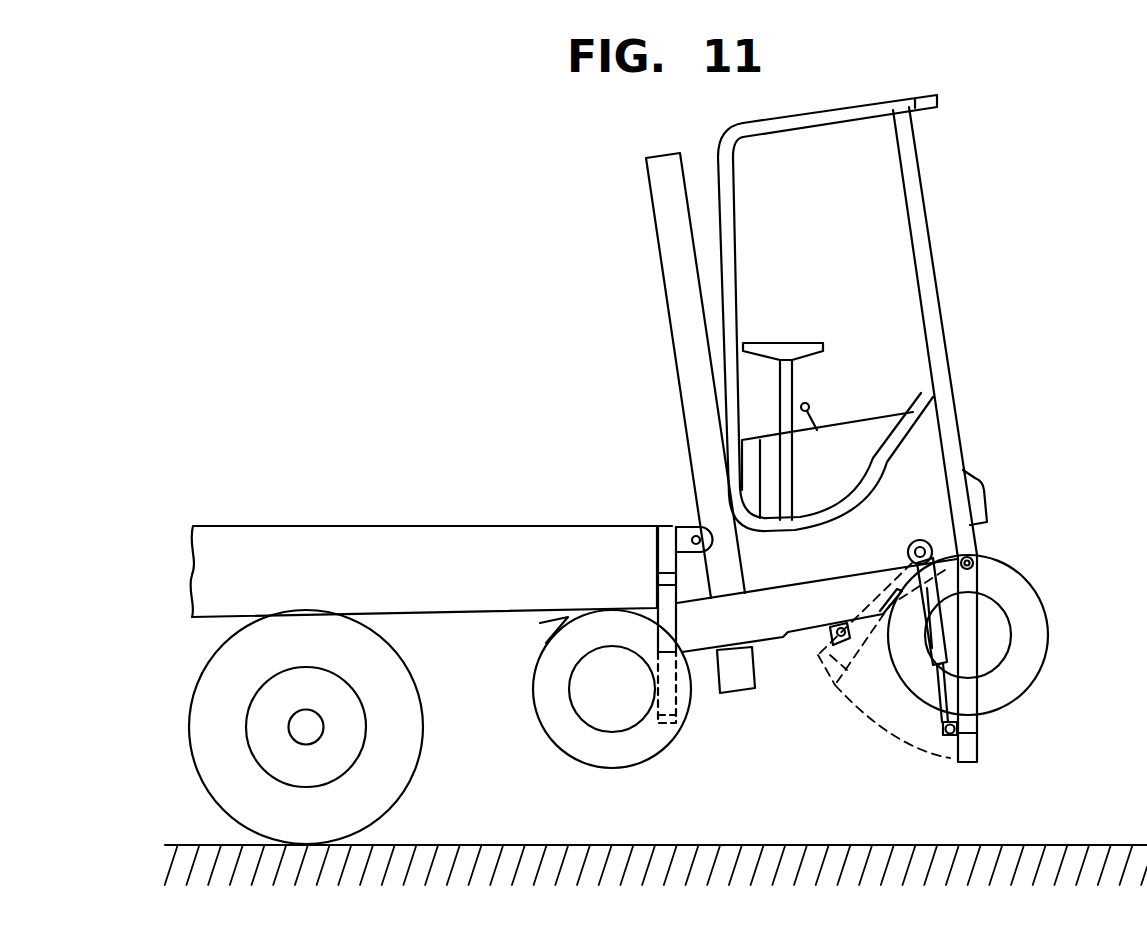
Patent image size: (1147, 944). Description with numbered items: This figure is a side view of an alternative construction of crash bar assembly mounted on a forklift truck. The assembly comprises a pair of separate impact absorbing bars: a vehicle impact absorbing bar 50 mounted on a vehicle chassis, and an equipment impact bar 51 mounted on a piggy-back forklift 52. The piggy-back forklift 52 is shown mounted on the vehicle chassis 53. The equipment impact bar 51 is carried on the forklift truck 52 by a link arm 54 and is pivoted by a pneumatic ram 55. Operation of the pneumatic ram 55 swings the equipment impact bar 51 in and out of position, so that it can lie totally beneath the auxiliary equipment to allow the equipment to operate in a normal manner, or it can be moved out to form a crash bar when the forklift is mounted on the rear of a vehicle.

The vehicle impact absorbing bar 50 is at (667, 723).
The equipment impact bar 51 is at (970, 750).
The piggy-back forklift 52 is at (935, 310).
The vehicle chassis 53 is at (433, 550).
The link arm 54 is at (970, 622).
The pneumatic ram 55 is at (863, 642).